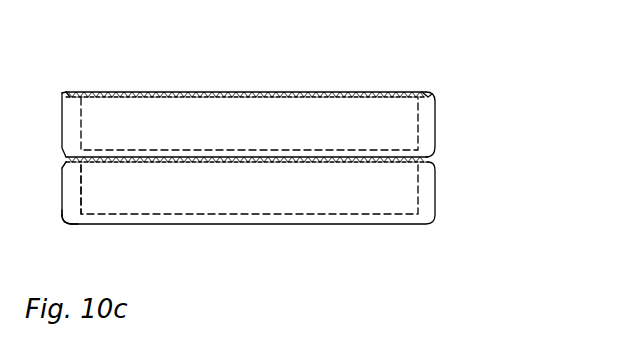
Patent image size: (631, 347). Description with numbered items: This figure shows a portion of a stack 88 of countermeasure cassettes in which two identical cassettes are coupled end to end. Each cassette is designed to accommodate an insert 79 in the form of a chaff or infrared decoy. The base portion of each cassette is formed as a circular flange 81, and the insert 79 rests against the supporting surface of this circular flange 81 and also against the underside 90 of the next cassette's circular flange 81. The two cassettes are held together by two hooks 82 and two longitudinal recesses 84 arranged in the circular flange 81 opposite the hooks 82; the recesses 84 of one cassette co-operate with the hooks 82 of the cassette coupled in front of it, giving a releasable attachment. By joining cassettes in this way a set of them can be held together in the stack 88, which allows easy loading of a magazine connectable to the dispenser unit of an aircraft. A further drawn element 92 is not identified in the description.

The insert 79 is at (347, 104).
The circular flange 81 is at (92, 150).
The hooks 82 is at (70, 92).
The longitudinal recesses 84 is at (72, 223).
The stack 88 is at (506, 157).
The underside 90 is at (85, 163).
The inner side wall 92 is at (87, 216).